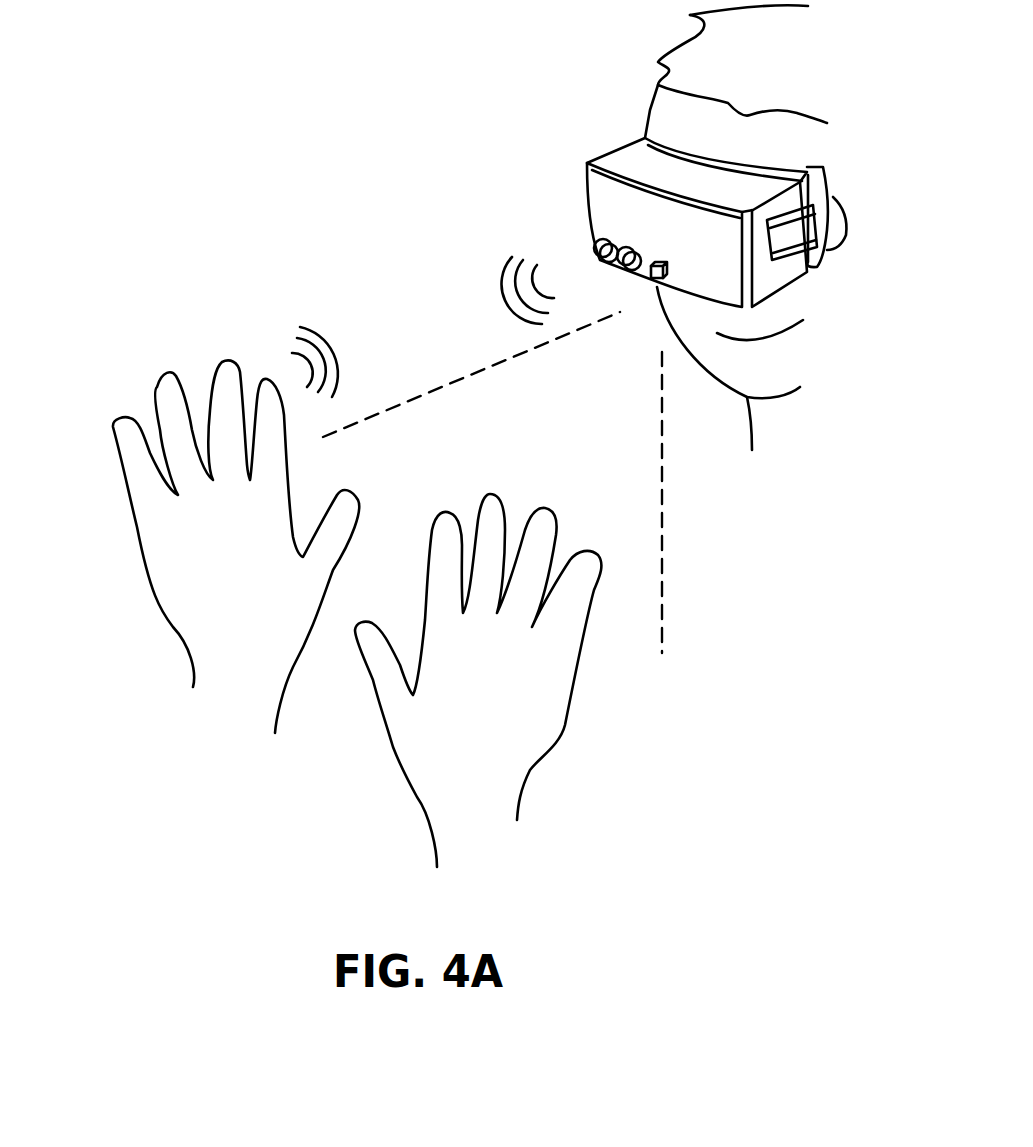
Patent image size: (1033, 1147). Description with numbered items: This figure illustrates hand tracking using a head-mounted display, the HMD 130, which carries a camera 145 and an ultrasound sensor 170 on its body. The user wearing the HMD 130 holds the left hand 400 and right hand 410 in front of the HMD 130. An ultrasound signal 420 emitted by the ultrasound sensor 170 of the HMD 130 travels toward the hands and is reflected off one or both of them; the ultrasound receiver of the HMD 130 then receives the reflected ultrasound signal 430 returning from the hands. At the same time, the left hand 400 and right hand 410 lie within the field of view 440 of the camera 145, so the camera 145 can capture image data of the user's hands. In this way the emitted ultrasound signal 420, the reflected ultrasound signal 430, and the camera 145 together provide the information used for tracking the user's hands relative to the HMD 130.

The HMD 130 is at (583, 133).
The ultrasound sensor 170 is at (583, 235).
The camera 145 is at (648, 287).
The ultrasound signal 420 is at (495, 268).
The reflected ultrasound signal 430 is at (285, 313).
The field of view 440 is at (677, 568).
The right hand 410 is at (137, 527).
The left hand 400 is at (563, 737).